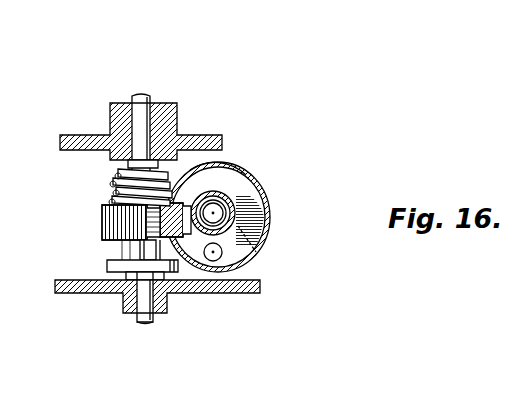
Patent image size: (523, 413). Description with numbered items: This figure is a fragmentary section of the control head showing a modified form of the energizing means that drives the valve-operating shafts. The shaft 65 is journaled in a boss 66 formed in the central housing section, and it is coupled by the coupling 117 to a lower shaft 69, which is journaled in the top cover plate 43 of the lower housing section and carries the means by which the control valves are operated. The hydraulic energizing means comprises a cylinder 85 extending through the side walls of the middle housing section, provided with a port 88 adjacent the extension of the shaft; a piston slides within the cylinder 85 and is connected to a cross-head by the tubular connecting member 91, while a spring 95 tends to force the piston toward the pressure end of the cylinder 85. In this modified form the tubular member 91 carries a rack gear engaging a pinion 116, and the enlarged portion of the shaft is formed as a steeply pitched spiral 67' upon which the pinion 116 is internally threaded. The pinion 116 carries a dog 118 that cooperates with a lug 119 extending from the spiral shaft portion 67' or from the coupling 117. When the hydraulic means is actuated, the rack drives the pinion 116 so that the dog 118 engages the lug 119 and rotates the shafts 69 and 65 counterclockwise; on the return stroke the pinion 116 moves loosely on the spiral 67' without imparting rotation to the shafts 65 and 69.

The shaft 65 is at (142, 95).
The boss 66 is at (177, 118).
The port 88 is at (205, 163).
The cylinder 85 is at (248, 178).
The tube 91 is at (232, 204).
The spring 95 is at (271, 215).
The steeply pitched spiral 67' is at (122, 185).
The pinion 116 is at (104, 216).
The dog 118 is at (146, 255).
The lug 119 is at (109, 266).
The coupling 117 is at (128, 274).
The top cover plate 43 is at (206, 292).
The shaft 69 is at (144, 326).